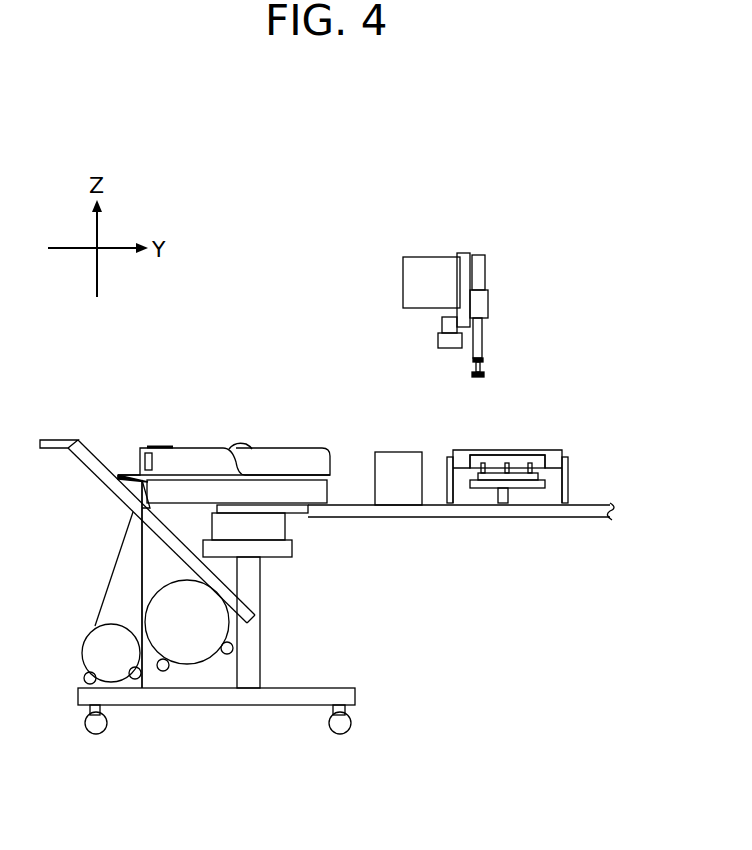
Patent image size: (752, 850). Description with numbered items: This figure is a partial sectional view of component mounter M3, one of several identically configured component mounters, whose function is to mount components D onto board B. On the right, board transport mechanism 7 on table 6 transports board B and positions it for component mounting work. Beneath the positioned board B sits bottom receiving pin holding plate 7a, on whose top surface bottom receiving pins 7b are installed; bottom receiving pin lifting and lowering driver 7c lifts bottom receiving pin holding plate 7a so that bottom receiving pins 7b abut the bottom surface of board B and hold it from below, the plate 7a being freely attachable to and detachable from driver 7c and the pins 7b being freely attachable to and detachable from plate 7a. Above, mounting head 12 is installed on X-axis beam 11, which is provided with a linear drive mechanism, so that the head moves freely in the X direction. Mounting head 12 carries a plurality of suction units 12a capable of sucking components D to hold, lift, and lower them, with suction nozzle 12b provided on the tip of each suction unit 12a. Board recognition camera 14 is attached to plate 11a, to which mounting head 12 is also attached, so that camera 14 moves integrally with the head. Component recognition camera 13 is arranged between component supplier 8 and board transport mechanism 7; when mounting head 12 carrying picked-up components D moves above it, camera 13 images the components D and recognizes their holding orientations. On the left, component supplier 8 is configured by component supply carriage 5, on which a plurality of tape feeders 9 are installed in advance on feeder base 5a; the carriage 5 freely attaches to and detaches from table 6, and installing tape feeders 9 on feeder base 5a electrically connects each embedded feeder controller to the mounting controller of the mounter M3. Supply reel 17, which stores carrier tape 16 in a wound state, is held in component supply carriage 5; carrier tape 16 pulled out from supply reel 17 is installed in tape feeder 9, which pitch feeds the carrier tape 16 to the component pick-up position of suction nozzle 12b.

The component mounter M3 is at (373, 149).
The component supply carriage 5 is at (298, 627).
The feeder base 5a is at (278, 495).
The table 6 is at (583, 512).
The board transport mechanism 7 is at (547, 492).
The bottom receiving pin holding plate 7a is at (478, 477).
The bottom receiving pins 7b is at (507, 468).
The bottom receiving pin lifting and lowering driver 7c is at (505, 498).
The component supplier 8 is at (115, 414).
The tape feeder 9 is at (198, 460).
The X-axis beam 11 is at (420, 265).
The plate 11a is at (463, 260).
The mounting head 12 is at (462, 276).
The suction unit 12a is at (478, 258).
The suction nozzle 12b is at (481, 368).
The component recognition camera 13 is at (385, 462).
The board recognition camera 14 is at (440, 340).
The carrier tape 16 is at (142, 590).
The supply reel 17 is at (157, 688).
The board B is at (548, 452).
The component D is at (480, 374).